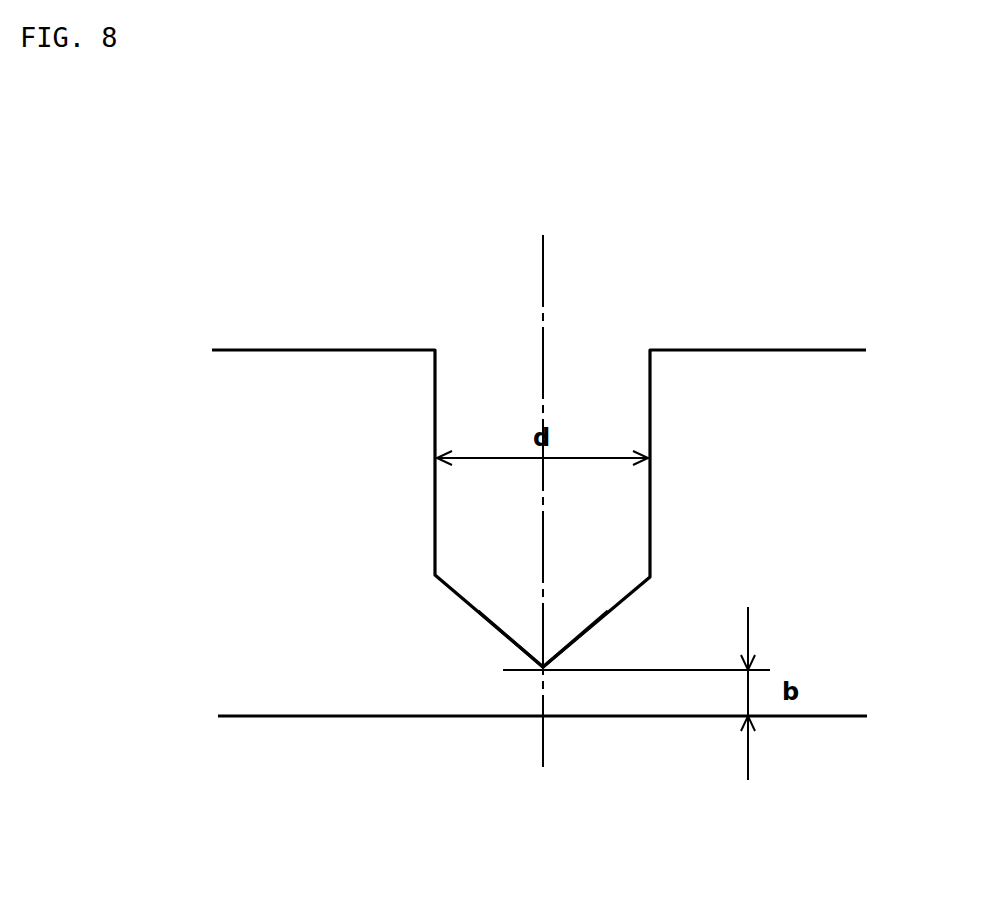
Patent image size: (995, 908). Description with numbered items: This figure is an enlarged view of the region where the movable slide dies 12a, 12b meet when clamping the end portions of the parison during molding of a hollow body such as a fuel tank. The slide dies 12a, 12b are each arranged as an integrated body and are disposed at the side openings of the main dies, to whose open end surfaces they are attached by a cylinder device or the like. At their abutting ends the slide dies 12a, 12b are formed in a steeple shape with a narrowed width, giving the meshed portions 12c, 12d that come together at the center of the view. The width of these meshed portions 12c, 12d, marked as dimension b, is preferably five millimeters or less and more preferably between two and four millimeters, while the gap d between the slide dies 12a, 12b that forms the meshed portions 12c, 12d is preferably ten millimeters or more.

The slide die 12a is at (294, 376).
The slide die 12b is at (784, 376).
The abutting portion 12c is at (527, 692).
The abutting portion 12d is at (568, 692).